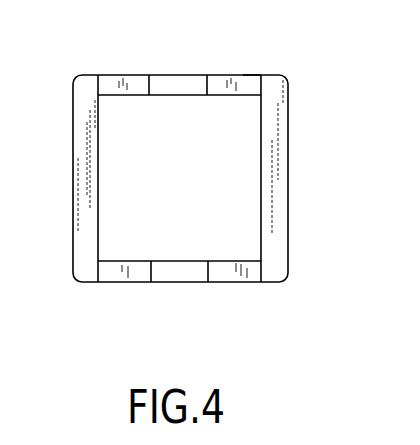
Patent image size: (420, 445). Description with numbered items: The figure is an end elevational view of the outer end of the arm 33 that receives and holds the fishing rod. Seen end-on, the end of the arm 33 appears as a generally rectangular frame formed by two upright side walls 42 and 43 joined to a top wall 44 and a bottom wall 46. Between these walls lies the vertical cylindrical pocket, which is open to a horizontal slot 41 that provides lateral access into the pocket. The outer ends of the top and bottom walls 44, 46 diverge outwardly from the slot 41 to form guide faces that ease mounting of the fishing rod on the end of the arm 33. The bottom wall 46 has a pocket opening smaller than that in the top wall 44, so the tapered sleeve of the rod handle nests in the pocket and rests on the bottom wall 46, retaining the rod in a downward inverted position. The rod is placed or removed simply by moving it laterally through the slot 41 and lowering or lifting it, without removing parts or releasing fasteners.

The arm 33 is at (278, 147).
The horizontal slot 41 is at (172, 85).
The upright side wall 42 is at (85, 170).
The upright side wall 43 is at (282, 195).
The top wall 44 is at (243, 75).
The bottom wall 46 is at (230, 275).